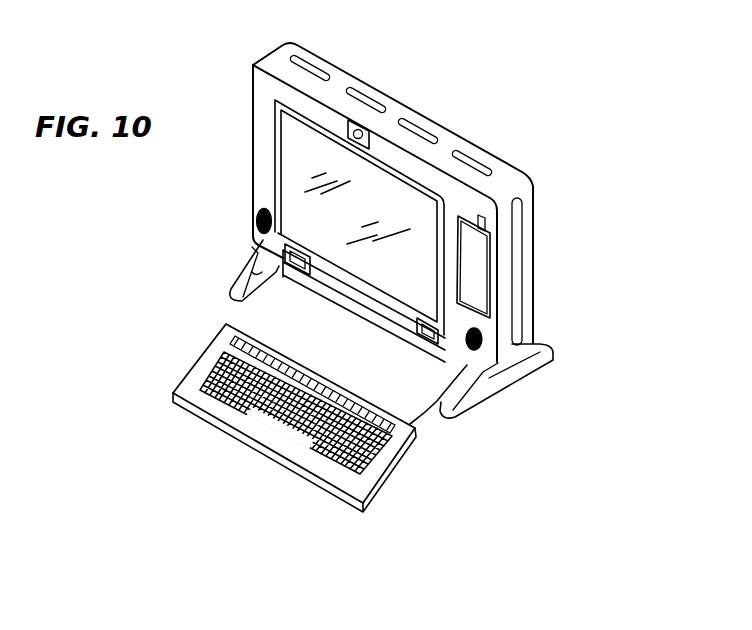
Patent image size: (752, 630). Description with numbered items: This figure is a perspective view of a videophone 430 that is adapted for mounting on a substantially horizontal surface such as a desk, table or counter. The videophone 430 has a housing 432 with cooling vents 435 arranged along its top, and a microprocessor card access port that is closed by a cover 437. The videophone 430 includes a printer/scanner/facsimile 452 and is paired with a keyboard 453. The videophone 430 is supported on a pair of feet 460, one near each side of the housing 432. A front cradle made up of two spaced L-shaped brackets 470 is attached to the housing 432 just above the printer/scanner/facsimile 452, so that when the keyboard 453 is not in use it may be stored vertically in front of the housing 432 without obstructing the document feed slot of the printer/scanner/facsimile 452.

The videophone 430 is at (562, 114).
The housing 432 is at (253, 88).
The cooling vents 435 is at (363, 119).
The cover 437 is at (515, 267).
The printer/scanner/facsimile 452 is at (323, 293).
The keyboard 453 is at (190, 397).
The feet 460 is at (260, 274).
The L-shaped brackets 470 is at (266, 244).